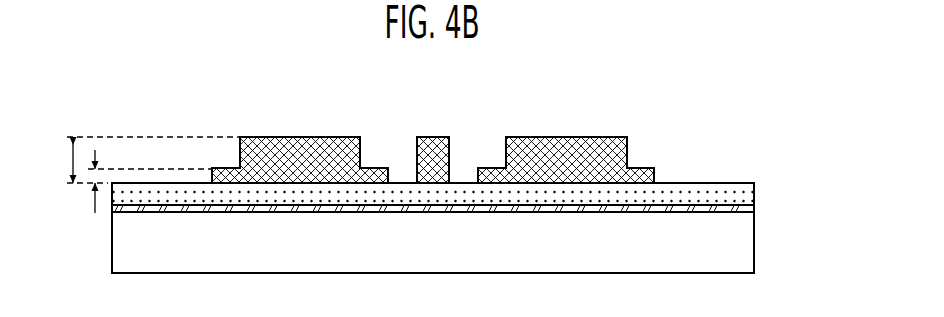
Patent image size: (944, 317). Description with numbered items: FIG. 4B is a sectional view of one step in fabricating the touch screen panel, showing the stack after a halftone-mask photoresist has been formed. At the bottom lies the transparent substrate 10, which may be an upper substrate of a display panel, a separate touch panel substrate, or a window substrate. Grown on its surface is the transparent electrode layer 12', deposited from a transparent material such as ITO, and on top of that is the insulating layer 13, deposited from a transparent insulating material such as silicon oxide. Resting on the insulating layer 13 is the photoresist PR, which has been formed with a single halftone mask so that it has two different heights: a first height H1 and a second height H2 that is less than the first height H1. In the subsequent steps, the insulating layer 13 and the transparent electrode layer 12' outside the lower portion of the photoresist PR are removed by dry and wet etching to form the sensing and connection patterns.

The transparent substrate 10 is at (753, 240).
The transparent electrode layer 12' is at (461, 216).
The insulating layer 13 is at (753, 192).
The photoresist PR is at (433, 160).
The first height H1 is at (144, 160).
The second height H2 is at (82, 200).